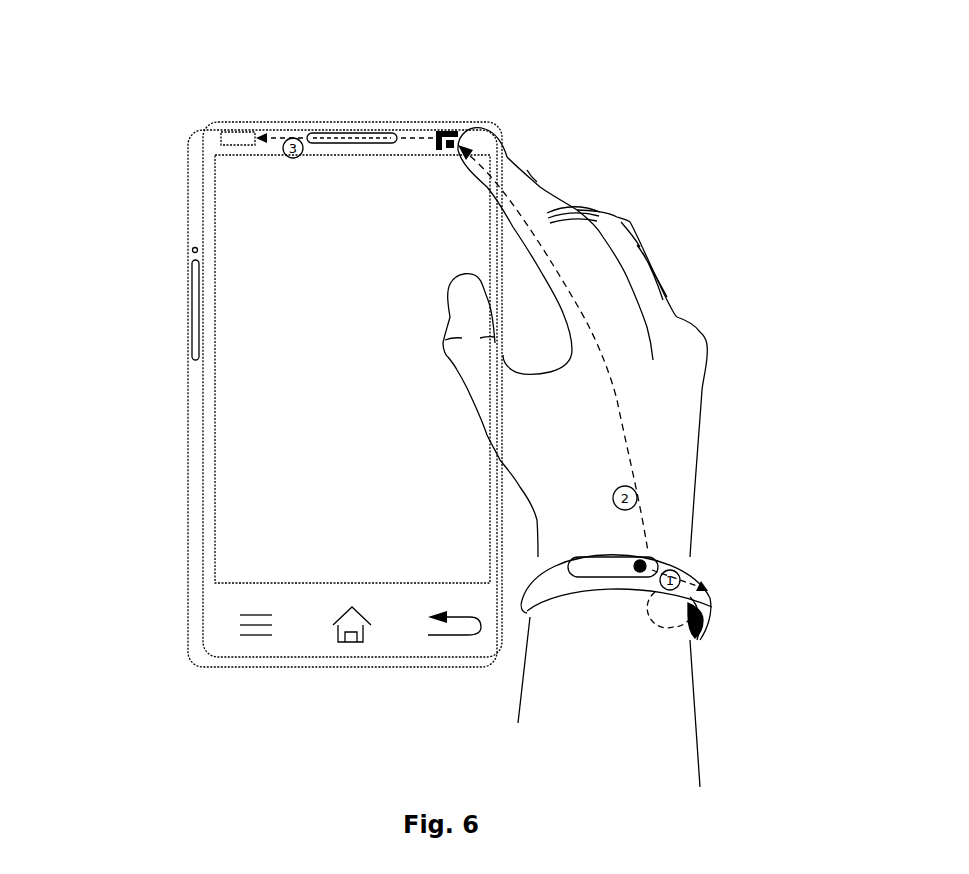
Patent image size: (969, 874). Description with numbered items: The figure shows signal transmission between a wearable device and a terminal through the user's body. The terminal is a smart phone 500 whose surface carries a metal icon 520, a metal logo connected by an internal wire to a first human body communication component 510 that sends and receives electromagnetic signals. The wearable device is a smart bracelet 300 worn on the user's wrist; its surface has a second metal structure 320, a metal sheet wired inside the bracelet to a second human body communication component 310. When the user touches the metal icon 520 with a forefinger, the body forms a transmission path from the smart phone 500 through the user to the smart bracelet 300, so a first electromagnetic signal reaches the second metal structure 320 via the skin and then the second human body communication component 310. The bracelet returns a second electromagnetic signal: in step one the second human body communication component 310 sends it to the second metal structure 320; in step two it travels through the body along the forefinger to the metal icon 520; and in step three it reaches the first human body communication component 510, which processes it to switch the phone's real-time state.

The smart phone 500 is at (184, 390).
The first human body communication component 510 is at (237, 133).
The metal icon 520 is at (459, 131).
The smart bracelet 300 is at (716, 588).
The second human body communication component 310 is at (647, 563).
The second metal structure 320 is at (703, 628).